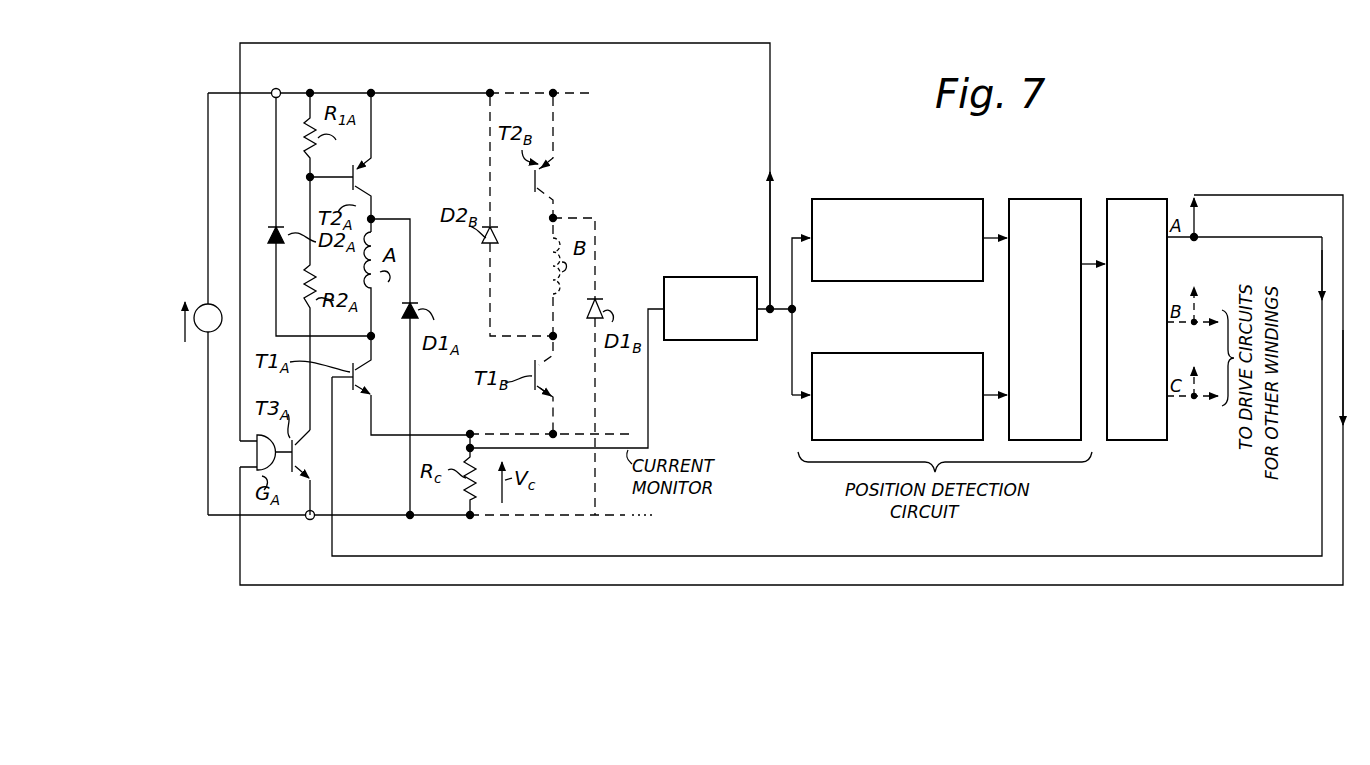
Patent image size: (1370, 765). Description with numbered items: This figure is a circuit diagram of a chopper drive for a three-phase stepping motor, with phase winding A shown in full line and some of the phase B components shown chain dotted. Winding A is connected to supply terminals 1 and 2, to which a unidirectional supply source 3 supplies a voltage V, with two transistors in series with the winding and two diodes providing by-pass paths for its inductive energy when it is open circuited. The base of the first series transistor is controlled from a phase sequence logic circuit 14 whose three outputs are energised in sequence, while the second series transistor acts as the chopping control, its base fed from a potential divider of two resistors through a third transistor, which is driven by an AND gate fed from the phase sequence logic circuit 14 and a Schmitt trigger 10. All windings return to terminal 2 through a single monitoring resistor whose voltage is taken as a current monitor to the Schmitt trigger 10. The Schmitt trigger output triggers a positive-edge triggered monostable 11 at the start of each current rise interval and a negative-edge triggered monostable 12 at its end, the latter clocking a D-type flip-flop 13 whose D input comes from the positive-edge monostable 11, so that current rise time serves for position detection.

The supply terminal 1 is at (276, 88).
The supply terminal 2 is at (308, 520).
The unidirectional supply source 3 is at (220, 326).
The Schmitt trigger circuit 10 is at (702, 274).
The positive-edge triggered monostable 11 is at (856, 325).
The negative-edge triggered monostable 12 is at (848, 196).
The D-type flip-flop 13 is at (1040, 196).
The phase sequence logic circuit 14 is at (1140, 196).